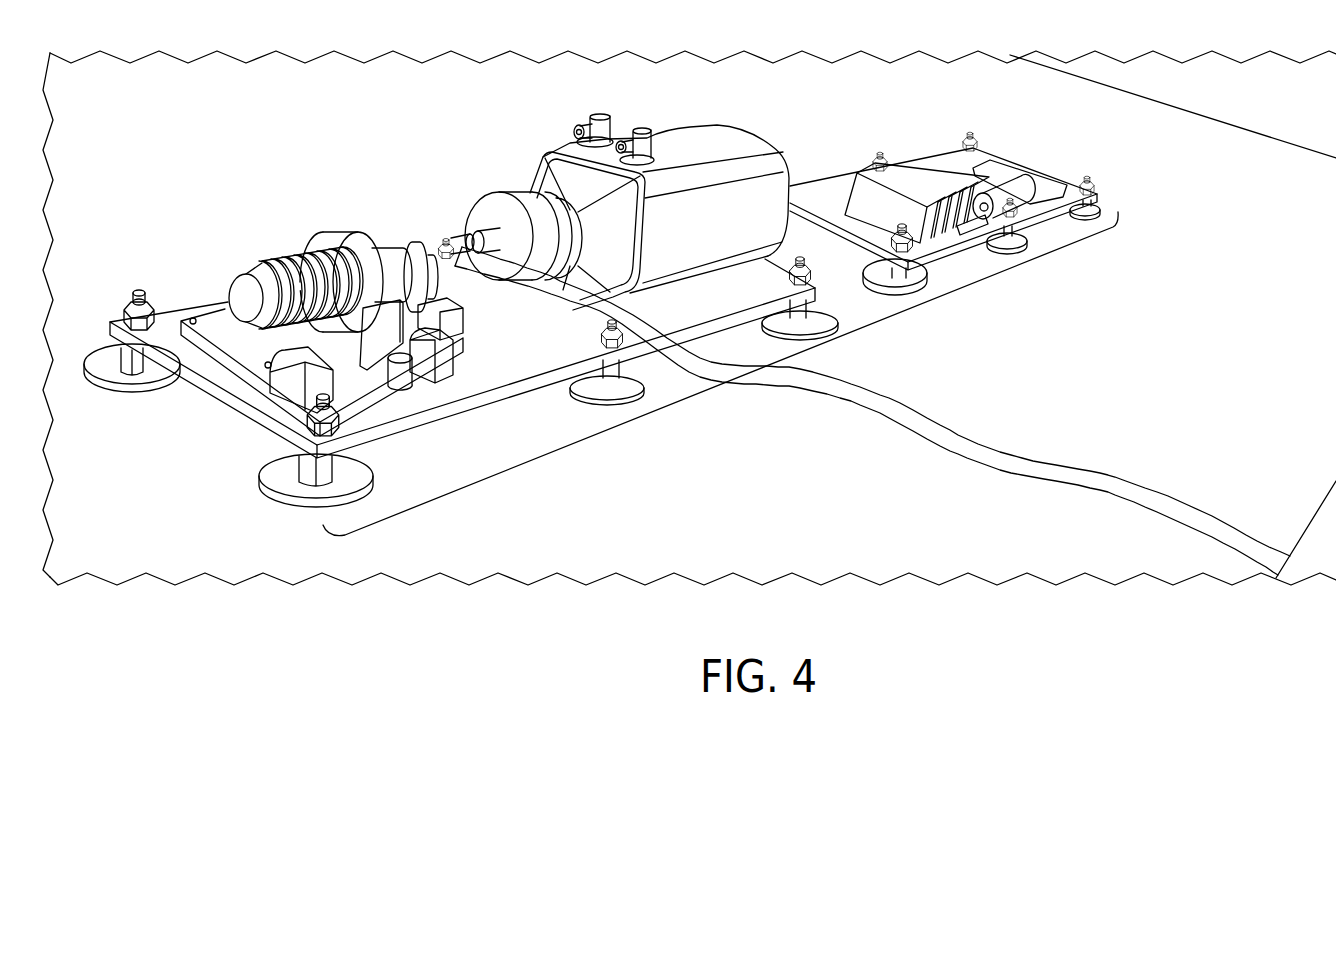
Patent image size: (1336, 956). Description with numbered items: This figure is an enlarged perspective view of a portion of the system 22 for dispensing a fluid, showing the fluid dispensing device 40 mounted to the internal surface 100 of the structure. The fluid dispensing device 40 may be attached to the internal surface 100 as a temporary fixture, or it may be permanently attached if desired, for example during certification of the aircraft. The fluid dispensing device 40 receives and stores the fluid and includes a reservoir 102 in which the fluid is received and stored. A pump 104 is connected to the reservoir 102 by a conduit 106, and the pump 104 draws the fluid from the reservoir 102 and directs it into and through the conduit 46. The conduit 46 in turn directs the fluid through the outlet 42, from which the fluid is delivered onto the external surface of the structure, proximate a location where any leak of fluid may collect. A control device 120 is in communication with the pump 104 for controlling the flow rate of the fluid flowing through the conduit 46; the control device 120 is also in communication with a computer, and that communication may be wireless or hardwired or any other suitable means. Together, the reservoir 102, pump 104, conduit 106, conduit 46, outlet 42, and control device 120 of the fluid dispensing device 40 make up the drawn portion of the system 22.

The internal surface 100 is at (1150, 123).
The outlet 42 is at (1324, 488).
The fluid dispensing device 40 is at (207, 402).
The pump 104 is at (352, 230).
The conduit 106 is at (466, 240).
The reservoir 102 is at (685, 142).
The control device 120 is at (932, 165).
The system 22 is at (746, 381).
The conduit 46 is at (902, 425).